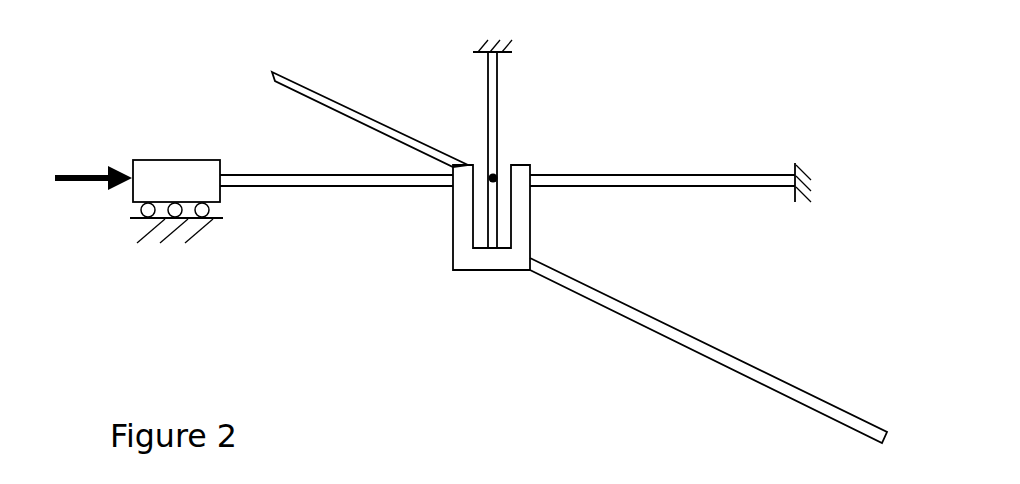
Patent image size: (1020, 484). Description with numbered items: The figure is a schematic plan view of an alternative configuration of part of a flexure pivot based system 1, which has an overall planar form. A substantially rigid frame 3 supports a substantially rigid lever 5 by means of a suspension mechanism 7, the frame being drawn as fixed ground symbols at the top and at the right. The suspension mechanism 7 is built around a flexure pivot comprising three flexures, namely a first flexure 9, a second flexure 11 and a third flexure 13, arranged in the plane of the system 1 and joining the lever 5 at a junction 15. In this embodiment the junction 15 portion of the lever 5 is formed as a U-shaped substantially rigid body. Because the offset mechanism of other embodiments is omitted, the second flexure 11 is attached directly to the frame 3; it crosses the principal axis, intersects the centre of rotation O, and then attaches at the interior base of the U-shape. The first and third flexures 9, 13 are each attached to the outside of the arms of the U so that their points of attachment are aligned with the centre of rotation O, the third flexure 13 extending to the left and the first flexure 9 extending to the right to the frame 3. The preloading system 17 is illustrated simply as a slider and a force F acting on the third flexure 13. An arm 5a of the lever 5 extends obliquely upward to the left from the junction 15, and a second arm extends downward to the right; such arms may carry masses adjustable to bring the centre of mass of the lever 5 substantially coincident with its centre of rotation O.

The system 1 is at (752, 80).
The frame 3 is at (510, 43).
The lever 5 is at (573, 291).
The arm 5a is at (297, 91).
The suspension mechanism 7 is at (373, 292).
The first flexure 9 is at (735, 187).
The second flexure 11 is at (498, 130).
The third flexure 13 is at (330, 186).
The junction 15 is at (523, 235).
The preloading system 17 is at (215, 142).
The centre of rotation O is at (497, 173).